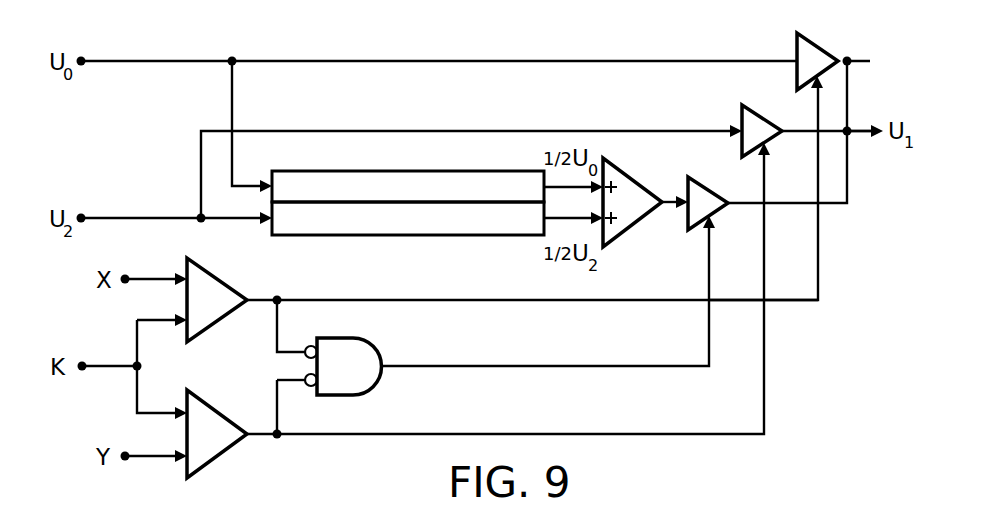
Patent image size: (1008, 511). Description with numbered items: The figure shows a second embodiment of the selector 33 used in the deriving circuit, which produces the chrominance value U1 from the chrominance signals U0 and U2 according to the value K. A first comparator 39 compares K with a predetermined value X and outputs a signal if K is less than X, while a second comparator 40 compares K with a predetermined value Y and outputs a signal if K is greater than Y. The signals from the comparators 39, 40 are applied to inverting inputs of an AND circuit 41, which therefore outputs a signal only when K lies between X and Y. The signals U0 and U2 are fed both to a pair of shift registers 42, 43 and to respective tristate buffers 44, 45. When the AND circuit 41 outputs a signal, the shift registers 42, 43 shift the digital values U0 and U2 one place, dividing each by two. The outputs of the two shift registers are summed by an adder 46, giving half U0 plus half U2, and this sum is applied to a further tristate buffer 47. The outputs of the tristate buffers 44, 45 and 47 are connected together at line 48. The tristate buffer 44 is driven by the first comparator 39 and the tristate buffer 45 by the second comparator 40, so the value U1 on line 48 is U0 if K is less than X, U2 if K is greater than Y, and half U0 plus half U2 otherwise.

The selector 33 is at (800, 337).
The first comparator 39 is at (226, 283).
The second comparator 40 is at (233, 445).
The AND circuit 41 is at (366, 339).
The shift register 42 is at (425, 199).
The shift register 43 is at (478, 230).
The tristate buffer 44 is at (753, 112).
The tristate buffer 45 is at (811, 38).
The adder 46 is at (630, 217).
The tristate buffer 47 is at (702, 180).
The line 48 is at (860, 128).